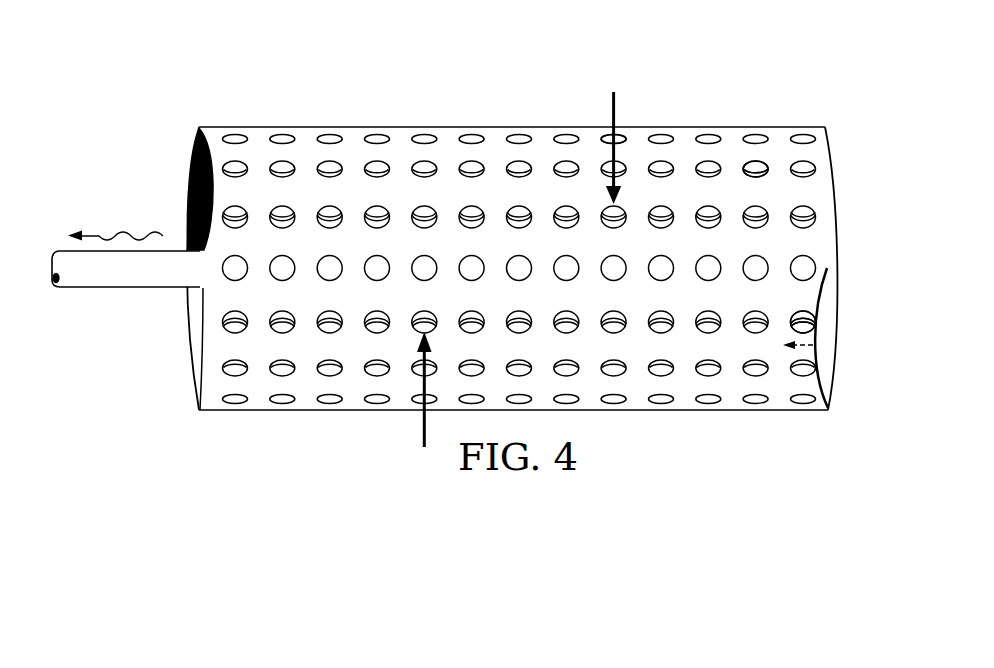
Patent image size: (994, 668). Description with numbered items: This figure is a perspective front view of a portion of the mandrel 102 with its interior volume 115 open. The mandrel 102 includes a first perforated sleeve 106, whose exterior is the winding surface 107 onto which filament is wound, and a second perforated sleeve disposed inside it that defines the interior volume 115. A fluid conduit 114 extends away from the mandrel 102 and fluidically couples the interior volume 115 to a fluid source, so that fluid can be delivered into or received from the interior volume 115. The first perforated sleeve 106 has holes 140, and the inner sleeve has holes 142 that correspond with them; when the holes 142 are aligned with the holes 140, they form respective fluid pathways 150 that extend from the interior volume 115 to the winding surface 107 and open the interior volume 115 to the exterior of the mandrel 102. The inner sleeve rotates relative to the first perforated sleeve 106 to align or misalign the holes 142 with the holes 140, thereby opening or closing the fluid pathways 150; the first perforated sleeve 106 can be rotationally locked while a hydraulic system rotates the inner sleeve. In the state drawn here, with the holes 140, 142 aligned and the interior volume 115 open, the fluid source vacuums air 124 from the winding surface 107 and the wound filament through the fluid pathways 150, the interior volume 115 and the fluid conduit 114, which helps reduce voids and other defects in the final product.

The mandrel 102 is at (397, 76).
The first perforated sleeve 106 is at (638, 138).
The winding surface 107 is at (495, 127).
The fluid conduit 114 is at (128, 288).
The interior volume 115 is at (832, 350).
The air 124 is at (137, 227).
The holes of the first perforated sleeve 140 is at (753, 172).
The holes of the second perforated sleeve 142 is at (803, 322).
The fluid pathways 150 is at (283, 135).